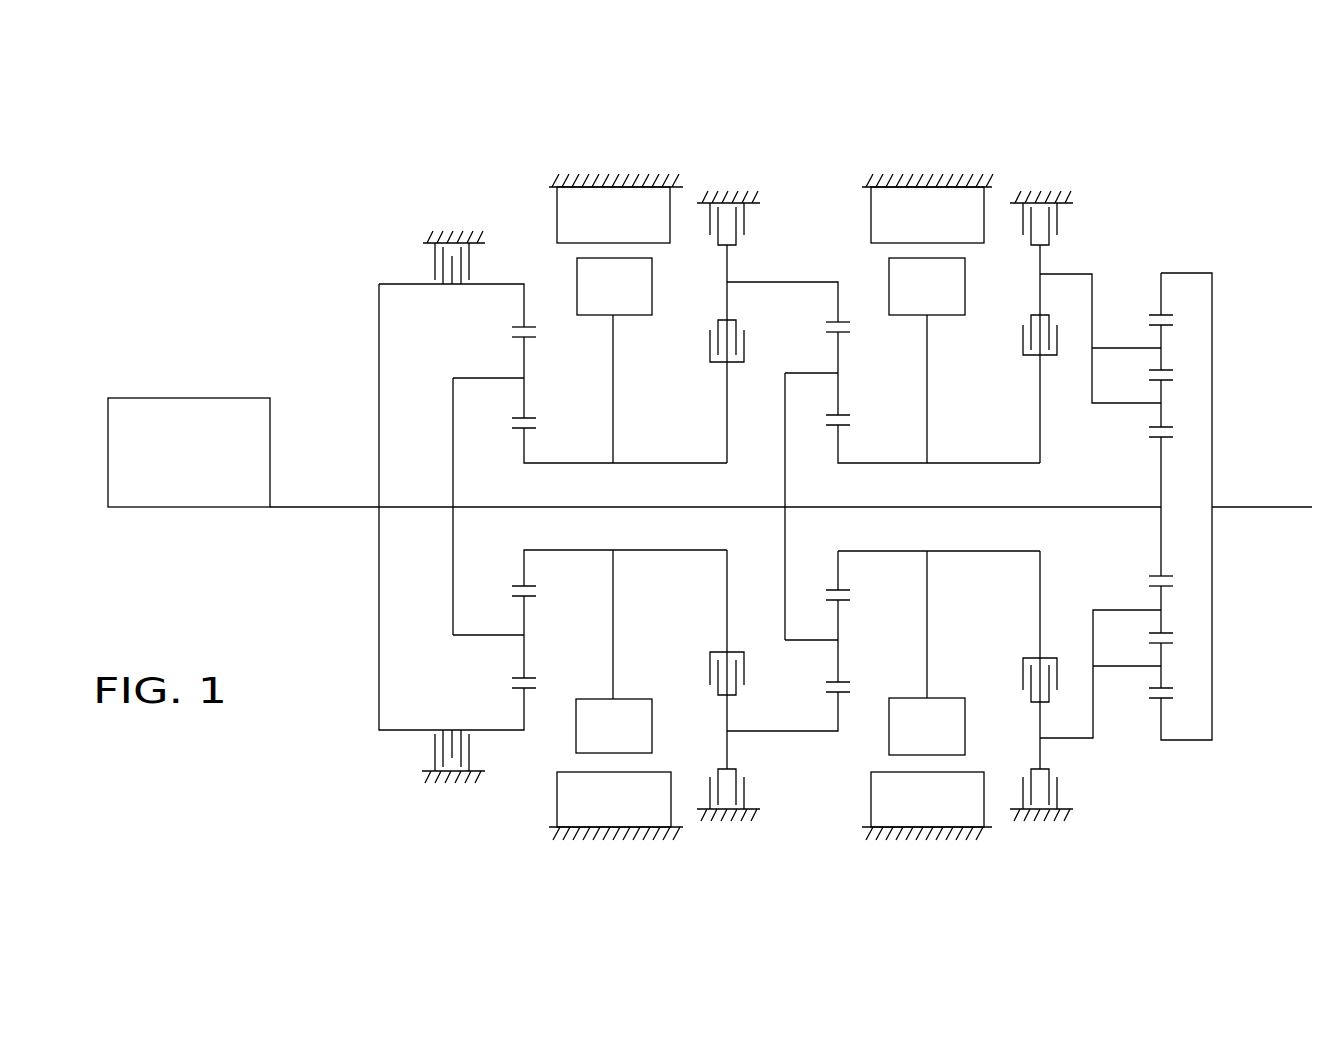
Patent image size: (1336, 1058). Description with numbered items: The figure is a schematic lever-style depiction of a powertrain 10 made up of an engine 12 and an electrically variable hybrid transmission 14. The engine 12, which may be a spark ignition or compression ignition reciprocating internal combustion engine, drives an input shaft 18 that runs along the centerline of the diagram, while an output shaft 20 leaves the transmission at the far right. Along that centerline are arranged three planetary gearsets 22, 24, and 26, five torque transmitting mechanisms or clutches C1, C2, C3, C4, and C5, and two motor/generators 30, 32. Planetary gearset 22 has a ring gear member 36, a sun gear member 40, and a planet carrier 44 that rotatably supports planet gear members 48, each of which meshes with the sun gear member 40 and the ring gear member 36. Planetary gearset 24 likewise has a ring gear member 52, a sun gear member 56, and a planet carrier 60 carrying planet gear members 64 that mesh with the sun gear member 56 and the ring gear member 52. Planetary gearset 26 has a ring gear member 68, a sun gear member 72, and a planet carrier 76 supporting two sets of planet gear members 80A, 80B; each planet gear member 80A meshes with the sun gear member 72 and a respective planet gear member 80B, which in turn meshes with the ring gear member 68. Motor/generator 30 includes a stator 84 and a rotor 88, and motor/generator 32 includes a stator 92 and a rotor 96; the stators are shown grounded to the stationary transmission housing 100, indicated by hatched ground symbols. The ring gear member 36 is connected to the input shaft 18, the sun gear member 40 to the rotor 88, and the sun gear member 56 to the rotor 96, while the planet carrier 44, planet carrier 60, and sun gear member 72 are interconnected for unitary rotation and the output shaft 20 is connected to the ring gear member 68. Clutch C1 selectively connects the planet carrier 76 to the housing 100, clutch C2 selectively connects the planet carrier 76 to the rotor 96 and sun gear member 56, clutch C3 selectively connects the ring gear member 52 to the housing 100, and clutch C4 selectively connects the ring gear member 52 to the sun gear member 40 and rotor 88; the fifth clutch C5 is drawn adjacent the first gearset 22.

The powertrain 10 is at (181, 265).
The engine 12 is at (197, 398).
The electrically variable hybrid transmission 14 is at (305, 220).
The input shaft 18 is at (345, 507).
The output shaft 20 is at (1276, 505).
The planetary gearset 22 is at (553, 450).
The planetary gearset 24 is at (883, 450).
The planetary gearset 26 is at (1158, 455).
The motor/generator 30 is at (603, 462).
The motor/generator 32 is at (917, 460).
The ring gear member 36 is at (518, 326).
The sun gear member 40 is at (535, 429).
The planet carrier 44 is at (453, 462).
The planet gear members 48 is at (535, 338).
The ring gear member 52 is at (826, 322).
The sun gear member 56 is at (845, 426).
The planet carrier 60 is at (786, 396).
The planet gear members 64 is at (829, 338).
The ring gear member 68 is at (1157, 700).
The sun gear member 72 is at (1158, 577).
The planet carrier 76 is at (1093, 630).
The planet gear members 80A is at (1170, 590).
The planet gear members 80B is at (1170, 645).
The stator 84 is at (613, 193).
The rotor 88 is at (652, 272).
The stator 92 is at (927, 193).
The rotor 96 is at (965, 275).
The transmission housing 100 is at (673, 187).
The clutch C1 is at (1082, 224).
The clutch C2 is at (998, 352).
The clutch C3 is at (759, 222).
The clutch C4 is at (693, 352).
The torque transmitting mechanism C5 is at (415, 261).